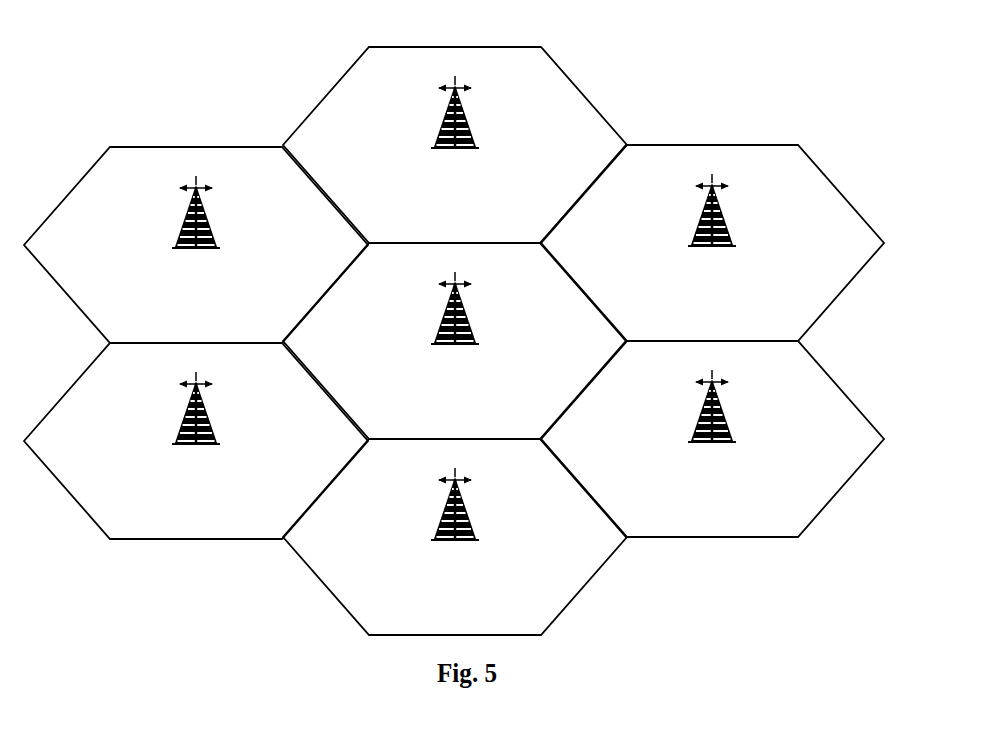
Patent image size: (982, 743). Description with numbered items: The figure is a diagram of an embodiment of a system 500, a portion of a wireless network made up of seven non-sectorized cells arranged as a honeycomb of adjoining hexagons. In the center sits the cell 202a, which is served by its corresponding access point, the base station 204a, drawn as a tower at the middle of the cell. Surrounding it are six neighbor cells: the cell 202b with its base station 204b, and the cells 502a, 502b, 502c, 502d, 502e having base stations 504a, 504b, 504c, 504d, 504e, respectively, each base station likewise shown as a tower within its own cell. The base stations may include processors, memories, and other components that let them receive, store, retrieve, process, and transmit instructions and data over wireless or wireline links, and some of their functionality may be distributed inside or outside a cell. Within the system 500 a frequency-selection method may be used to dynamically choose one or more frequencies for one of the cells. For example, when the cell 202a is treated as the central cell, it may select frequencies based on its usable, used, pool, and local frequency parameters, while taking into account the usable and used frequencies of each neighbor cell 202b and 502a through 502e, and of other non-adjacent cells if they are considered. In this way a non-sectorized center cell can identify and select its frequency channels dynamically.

The system 500 is at (216, 70).
The cell 502a is at (736, 332).
The cell 502b is at (479, 234).
The cell 502c is at (220, 334).
The cell 502d is at (220, 530).
The cell 502e is at (479, 626).
The cell 202a is at (479, 430).
The cell 202b is at (736, 528).
The base station 504a is at (698, 235).
The base station 504b is at (441, 137).
The base station 504c is at (182, 237).
The base station 504d is at (182, 433).
The base station 504e is at (441, 529).
The base station 204a is at (441, 333).
The base station 204b is at (698, 431).